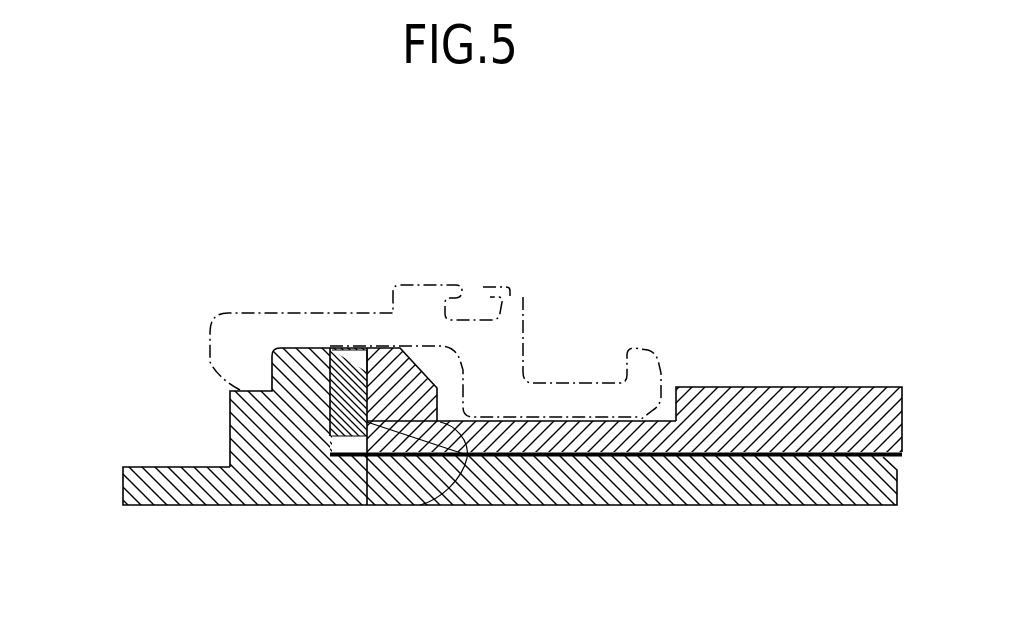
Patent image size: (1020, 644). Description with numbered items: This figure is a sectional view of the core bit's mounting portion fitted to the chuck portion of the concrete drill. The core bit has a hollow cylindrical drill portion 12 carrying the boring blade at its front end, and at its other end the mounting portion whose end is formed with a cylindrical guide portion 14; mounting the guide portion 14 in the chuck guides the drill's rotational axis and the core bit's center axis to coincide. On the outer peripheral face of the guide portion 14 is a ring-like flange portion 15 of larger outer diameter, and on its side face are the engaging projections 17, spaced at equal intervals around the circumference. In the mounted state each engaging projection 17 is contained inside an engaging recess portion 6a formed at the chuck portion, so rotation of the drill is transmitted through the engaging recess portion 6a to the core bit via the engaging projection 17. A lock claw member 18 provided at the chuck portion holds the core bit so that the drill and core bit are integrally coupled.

The drill portion 12 is at (160, 467).
The guide portion 14 is at (723, 447).
The flange portion 15 is at (312, 347).
The engaging projection 17 is at (420, 505).
The lock claw member 18 is at (439, 283).
The engaging recess portion 6a is at (366, 505).